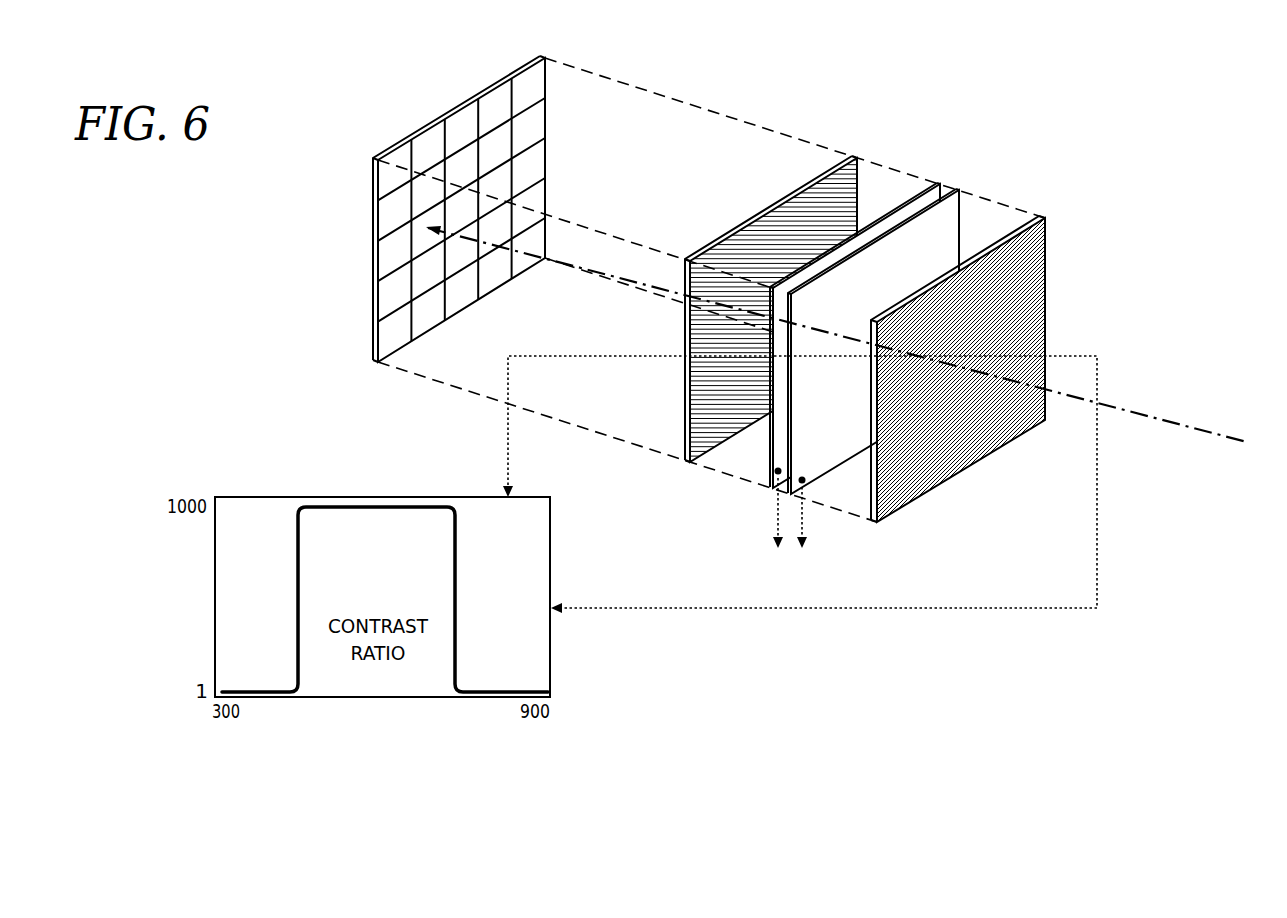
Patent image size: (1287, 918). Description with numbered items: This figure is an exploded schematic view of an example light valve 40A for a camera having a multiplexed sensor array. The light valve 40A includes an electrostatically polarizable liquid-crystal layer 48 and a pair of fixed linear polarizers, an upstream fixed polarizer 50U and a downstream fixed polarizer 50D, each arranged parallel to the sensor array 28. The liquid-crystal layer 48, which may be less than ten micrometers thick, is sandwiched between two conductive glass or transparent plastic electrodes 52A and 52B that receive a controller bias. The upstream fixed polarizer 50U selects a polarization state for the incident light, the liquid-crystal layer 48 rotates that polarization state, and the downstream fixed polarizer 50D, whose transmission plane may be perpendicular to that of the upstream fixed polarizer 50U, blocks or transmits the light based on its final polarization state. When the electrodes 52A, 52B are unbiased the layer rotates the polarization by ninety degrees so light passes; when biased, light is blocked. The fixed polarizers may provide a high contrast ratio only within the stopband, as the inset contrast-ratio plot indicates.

The sensor array 28 is at (375, 296).
The light valve 40A is at (760, 97).
The liquid-crystal layer 48 is at (839, 360).
The downstream fixed polarizer 50D is at (686, 391).
The upstream fixed polarizer 50U is at (1047, 293).
The electrode 52A is at (948, 256).
The electrode 52B is at (767, 419).